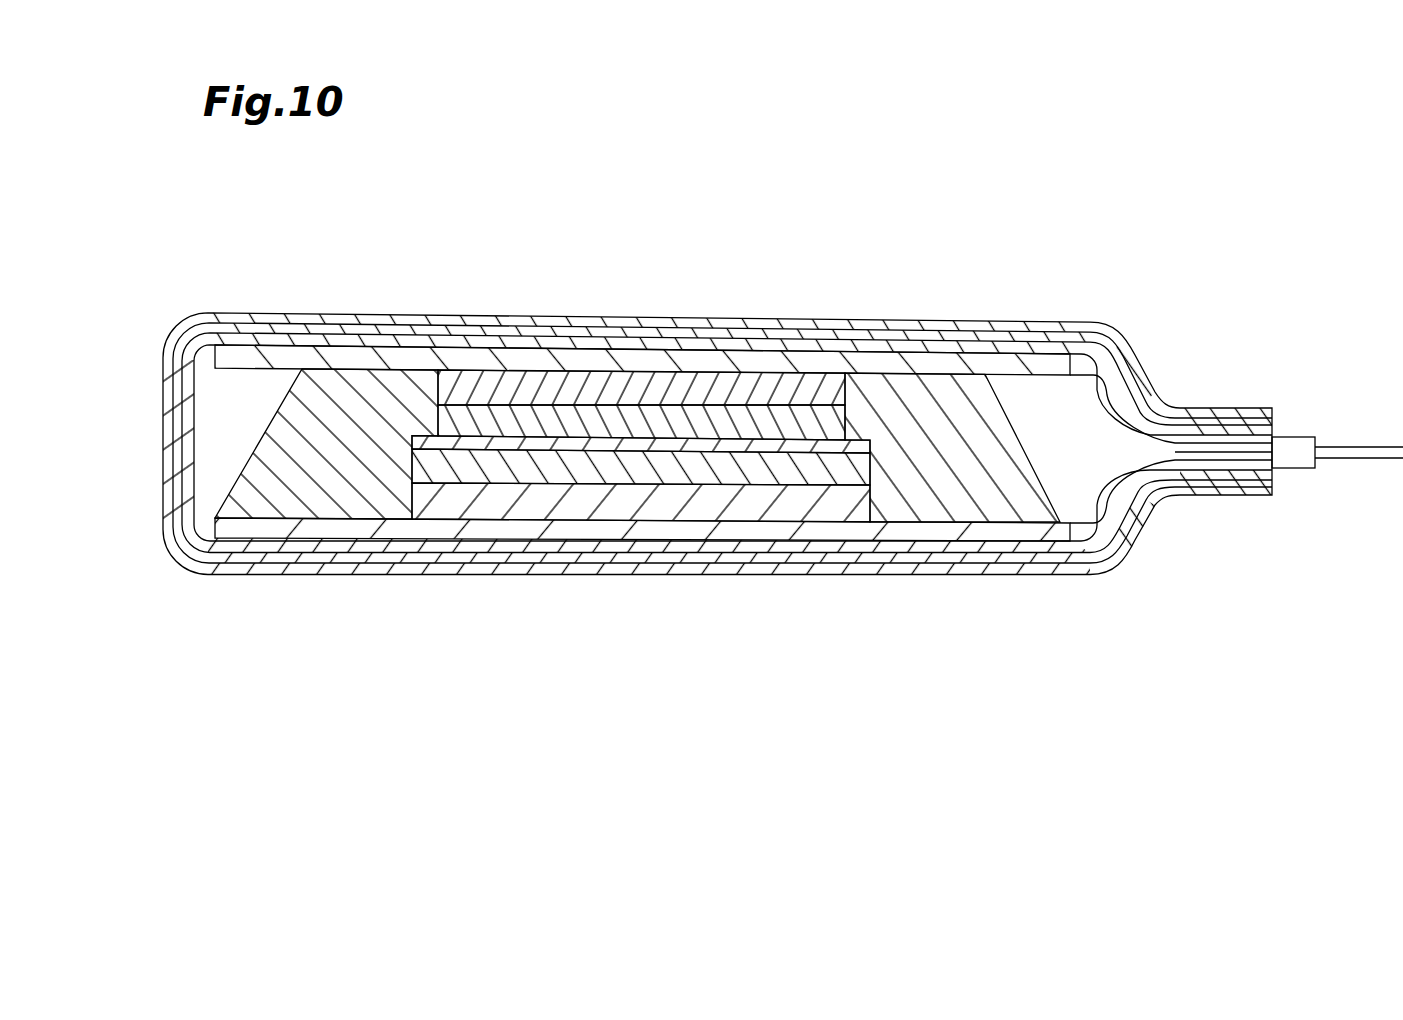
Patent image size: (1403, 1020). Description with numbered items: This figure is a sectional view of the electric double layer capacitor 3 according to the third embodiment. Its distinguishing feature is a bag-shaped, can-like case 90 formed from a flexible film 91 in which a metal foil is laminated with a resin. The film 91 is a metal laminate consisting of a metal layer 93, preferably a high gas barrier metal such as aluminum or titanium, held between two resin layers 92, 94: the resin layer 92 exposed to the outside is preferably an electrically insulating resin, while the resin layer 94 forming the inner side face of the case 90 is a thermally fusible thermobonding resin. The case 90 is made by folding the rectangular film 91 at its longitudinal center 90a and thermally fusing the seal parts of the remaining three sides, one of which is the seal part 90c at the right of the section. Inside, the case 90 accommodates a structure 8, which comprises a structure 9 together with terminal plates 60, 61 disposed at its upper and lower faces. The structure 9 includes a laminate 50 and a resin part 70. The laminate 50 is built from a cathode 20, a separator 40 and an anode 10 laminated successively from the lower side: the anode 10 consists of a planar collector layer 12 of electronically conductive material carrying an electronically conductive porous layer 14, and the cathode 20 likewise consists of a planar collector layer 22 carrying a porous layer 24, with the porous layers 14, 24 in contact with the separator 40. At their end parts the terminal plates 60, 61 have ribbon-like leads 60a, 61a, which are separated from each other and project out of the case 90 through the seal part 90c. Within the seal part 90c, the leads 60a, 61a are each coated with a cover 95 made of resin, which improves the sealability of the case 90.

The electric double layer capacitor 3 is at (672, 638).
The structure 8 is at (212, 383).
The structure 9 is at (1189, 570).
The anode 10 is at (1089, 598).
The collector layer 12 is at (850, 380).
The porous layer 14 is at (850, 416).
The cathode 20 is at (1089, 688).
The collector layer 22 is at (872, 498).
The porous layer 24 is at (872, 463).
The separator 40 is at (872, 446).
The laminate 50 is at (1139, 605).
The terminal plate 60 is at (206, 348).
The lead 60a is at (1120, 400).
The terminal plate 61 is at (205, 536).
The lead 61a is at (1150, 492).
The resin part 70 is at (260, 431).
The case 90 is at (840, 319).
The longitudinal center 90a is at (165, 482).
The seal part 90c is at (1246, 408).
The film 91 is at (621, 218).
The resin layer 92 is at (532, 317).
The metal layer 93 is at (542, 330).
The resin layer 94 is at (548, 344).
The cover 95 is at (1293, 437).